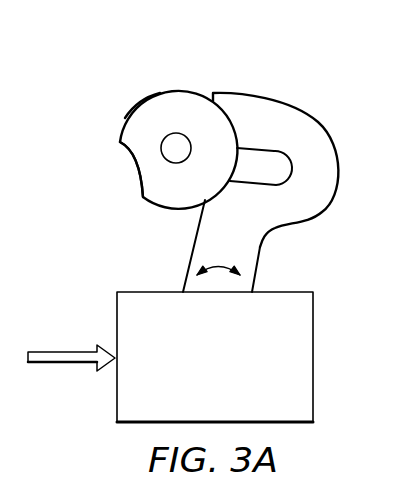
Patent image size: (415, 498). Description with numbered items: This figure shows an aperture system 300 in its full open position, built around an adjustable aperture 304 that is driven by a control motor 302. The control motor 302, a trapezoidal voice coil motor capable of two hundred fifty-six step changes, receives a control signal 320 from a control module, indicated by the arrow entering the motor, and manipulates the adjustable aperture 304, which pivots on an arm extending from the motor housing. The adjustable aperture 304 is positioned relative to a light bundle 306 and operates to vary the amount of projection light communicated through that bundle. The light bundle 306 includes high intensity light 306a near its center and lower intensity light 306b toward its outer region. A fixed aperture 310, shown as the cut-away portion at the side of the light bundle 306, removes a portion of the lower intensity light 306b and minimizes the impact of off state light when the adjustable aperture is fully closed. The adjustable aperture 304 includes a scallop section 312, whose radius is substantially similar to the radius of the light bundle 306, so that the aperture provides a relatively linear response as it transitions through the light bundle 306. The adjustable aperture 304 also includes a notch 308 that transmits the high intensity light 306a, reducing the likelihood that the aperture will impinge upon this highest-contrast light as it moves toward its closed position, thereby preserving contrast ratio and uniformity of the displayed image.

The aperture system 300 is at (92, 75).
The control motor 302 is at (233, 372).
The adjustable aperture 304 is at (193, 244).
The light bundle 306 is at (153, 90).
The high intensity light 306a is at (176, 135).
The lower intensity light 306b is at (137, 125).
The notch 308 is at (259, 181).
The fixed aperture 310 is at (128, 172).
The scallop section 312 is at (232, 115).
The control signal 320 is at (62, 350).